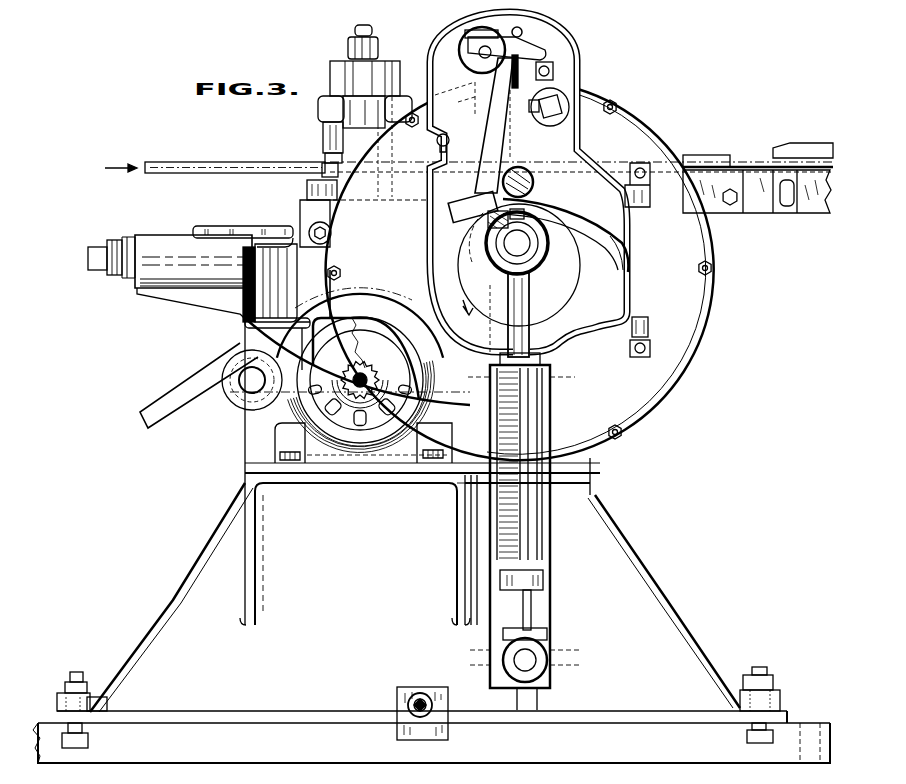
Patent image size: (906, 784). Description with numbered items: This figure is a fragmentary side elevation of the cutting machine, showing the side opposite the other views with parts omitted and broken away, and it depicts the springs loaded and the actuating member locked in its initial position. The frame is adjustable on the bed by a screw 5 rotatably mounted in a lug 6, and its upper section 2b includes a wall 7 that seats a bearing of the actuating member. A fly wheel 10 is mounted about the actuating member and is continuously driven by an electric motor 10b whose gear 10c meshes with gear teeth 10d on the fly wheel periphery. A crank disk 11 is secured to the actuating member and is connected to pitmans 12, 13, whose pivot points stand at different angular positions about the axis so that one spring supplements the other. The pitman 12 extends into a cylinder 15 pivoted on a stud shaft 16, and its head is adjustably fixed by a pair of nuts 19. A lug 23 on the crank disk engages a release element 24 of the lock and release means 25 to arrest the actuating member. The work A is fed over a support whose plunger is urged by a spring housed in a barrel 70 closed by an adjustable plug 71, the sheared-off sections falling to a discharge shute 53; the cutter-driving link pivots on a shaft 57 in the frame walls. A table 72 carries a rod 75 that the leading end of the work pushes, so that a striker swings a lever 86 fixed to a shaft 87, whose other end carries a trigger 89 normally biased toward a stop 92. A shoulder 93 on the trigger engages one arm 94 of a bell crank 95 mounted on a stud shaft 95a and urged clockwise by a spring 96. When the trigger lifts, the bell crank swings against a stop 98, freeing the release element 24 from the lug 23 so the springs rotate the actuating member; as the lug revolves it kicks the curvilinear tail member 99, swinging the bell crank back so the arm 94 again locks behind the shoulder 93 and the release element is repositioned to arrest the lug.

The work A is at (200, 162).
The upper section of the frame 2b is at (257, 433).
The screw 5 is at (421, 693).
The lug 6 is at (403, 692).
The wall 7 is at (652, 406).
The fly wheel 10 is at (385, 330).
The electric motor 10b is at (345, 462).
The gear 10c is at (352, 366).
The gear teeth 10d is at (340, 310).
The crank disk 11 is at (583, 298).
The pitman 12 is at (530, 337).
The pitman 13 is at (490, 328).
The cylinder 15 is at (550, 545).
The stud shaft 16 is at (533, 662).
The nuts 19 is at (507, 588).
The lug 23 is at (590, 211).
The release element 24 is at (486, 228).
The lock and release means 25 is at (528, 182).
The discharge shute 53 is at (183, 388).
The pin or shaft 57 is at (243, 390).
The barrel 70 is at (152, 241).
The plug 71 is at (116, 238).
The table 72 is at (768, 203).
The rod 75 is at (770, 160).
The lever 86 is at (456, 98).
The shaft 87 is at (462, 52).
The trigger 89 is at (523, 31).
The stop 92 is at (556, 70).
The shoulder 93 is at (520, 45).
The arm of the bell crank 94 is at (505, 100).
The bell crank 95 is at (492, 143).
The stud shaft 95a is at (535, 185).
The spring 96 is at (466, 203).
The stop 98 is at (568, 96).
The tail member 99 is at (613, 228).